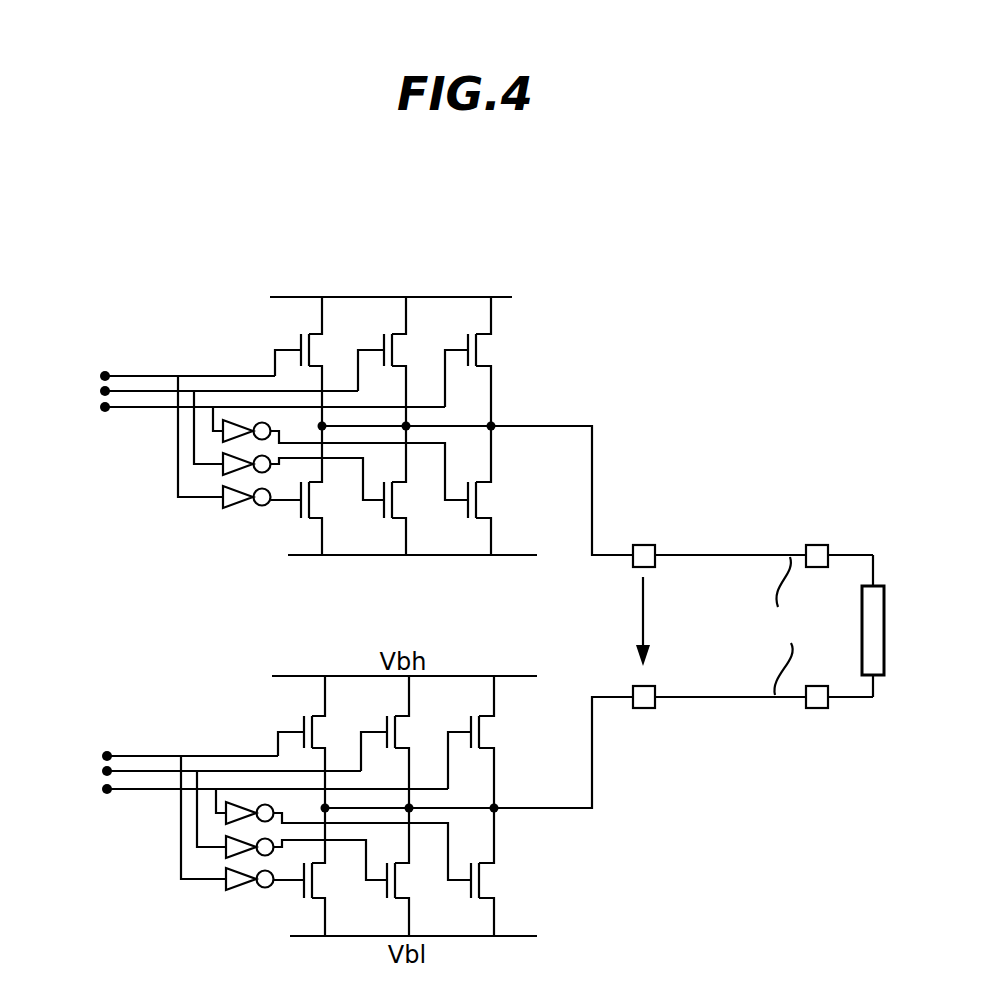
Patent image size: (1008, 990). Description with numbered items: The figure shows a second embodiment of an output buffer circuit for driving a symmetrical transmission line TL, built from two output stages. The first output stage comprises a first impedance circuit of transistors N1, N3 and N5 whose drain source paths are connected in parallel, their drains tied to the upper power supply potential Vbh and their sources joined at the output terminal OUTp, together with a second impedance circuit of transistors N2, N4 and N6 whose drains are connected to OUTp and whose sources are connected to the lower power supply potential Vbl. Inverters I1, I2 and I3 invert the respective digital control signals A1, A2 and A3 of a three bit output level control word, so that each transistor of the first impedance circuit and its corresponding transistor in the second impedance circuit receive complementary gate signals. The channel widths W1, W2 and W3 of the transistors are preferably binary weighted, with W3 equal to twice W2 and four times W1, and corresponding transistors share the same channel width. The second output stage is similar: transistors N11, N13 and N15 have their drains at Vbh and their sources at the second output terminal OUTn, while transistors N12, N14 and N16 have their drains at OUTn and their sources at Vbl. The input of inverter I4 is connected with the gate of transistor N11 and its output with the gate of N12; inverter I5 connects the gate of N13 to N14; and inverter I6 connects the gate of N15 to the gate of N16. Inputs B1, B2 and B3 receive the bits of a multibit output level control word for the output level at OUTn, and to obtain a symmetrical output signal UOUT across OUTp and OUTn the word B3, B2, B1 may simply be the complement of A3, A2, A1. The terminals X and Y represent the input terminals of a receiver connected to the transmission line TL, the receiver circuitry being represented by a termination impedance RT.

The transistor N1 is at (483, 361).
The transistor N2 is at (396, 490).
The transistor N3 is at (397, 361).
The transistor N4 is at (353, 490).
The transistor N5 is at (313, 361).
The transistor N6 is at (311, 490).
The transistor N11 is at (483, 742).
The transistor N12 is at (397, 872).
The transistor N13 is at (397, 742).
The transistor N14 is at (355, 872).
The transistor N15 is at (313, 742).
The transistor N16 is at (312, 872).
The inverter I1 is at (234, 442).
The inverter I2 is at (234, 475).
The inverter I3 is at (234, 508).
The inverter I4 is at (235, 822).
The inverter I5 is at (235, 856).
The inverter I6 is at (235, 889).
The channel width W1 is at (501, 352).
The channel width W2 is at (416, 352).
The channel width W3 is at (332, 352).
The digital control signal A1 is at (250, 415).
The digital control signal A2 is at (206, 418).
The digital control signal A3 is at (165, 422).
The input for a bit of the multibit output level control signal B1 is at (251, 797).
The input for a bit of the multibit output level control signal B2 is at (208, 801).
The input for a bit of the multibit output level control signal B3 is at (166, 804).
The upper power supply potential Vbh is at (391, 282).
The lower power supply potential Vbl is at (412, 572).
The output terminal OUTp is at (645, 545).
The second output terminal OUTn is at (645, 708).
The symmetrical output signal UOUT is at (681, 621).
The symmetrical transmission line TL is at (792, 626).
The termination impedance RT is at (891, 626).
The input terminal of a receiver X is at (834, 547).
The input terminal of a receiver Y is at (833, 706).